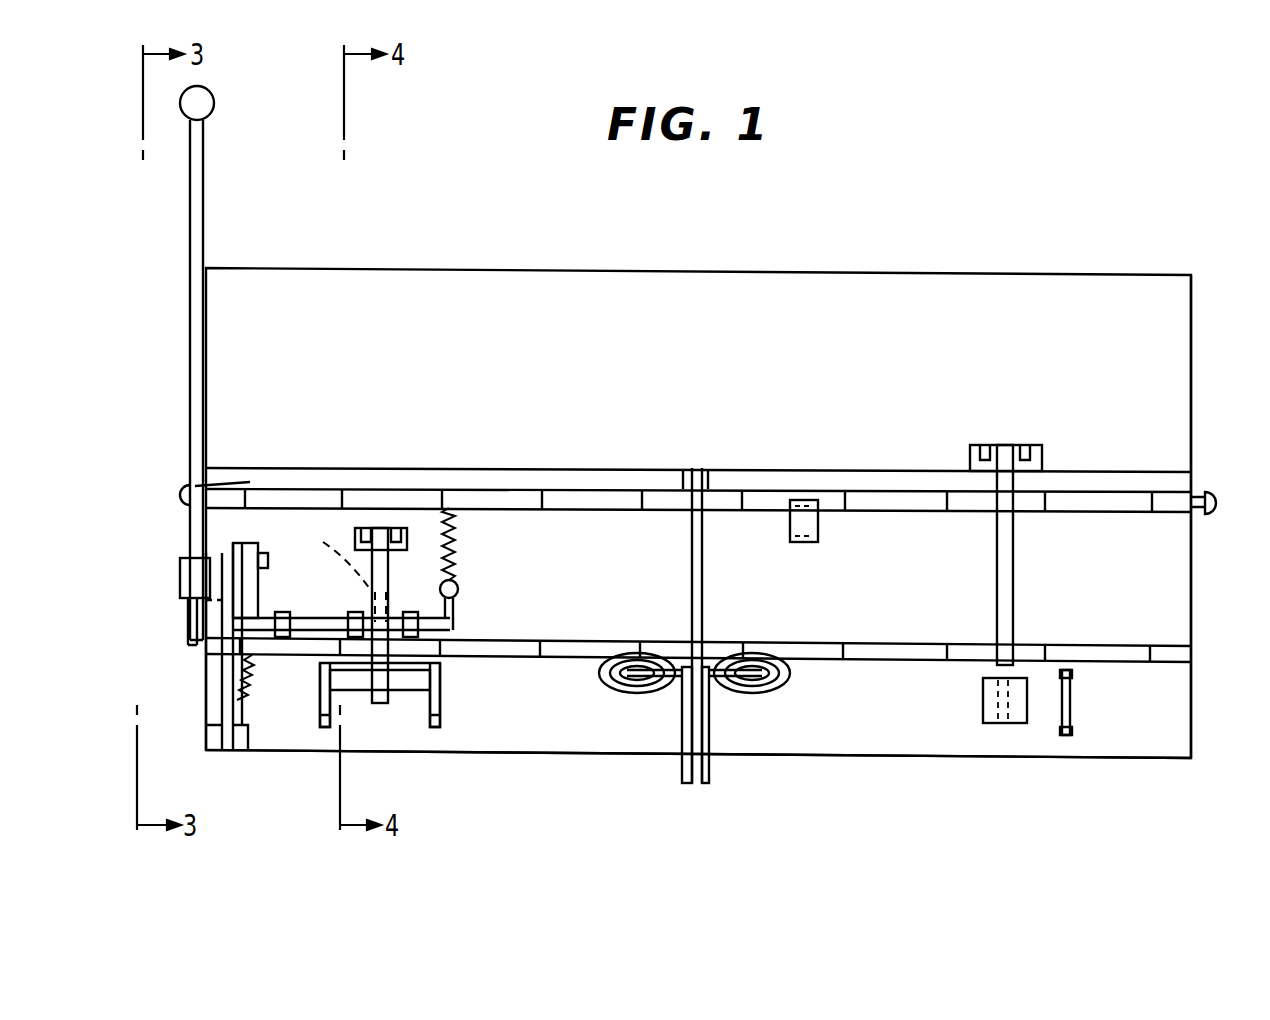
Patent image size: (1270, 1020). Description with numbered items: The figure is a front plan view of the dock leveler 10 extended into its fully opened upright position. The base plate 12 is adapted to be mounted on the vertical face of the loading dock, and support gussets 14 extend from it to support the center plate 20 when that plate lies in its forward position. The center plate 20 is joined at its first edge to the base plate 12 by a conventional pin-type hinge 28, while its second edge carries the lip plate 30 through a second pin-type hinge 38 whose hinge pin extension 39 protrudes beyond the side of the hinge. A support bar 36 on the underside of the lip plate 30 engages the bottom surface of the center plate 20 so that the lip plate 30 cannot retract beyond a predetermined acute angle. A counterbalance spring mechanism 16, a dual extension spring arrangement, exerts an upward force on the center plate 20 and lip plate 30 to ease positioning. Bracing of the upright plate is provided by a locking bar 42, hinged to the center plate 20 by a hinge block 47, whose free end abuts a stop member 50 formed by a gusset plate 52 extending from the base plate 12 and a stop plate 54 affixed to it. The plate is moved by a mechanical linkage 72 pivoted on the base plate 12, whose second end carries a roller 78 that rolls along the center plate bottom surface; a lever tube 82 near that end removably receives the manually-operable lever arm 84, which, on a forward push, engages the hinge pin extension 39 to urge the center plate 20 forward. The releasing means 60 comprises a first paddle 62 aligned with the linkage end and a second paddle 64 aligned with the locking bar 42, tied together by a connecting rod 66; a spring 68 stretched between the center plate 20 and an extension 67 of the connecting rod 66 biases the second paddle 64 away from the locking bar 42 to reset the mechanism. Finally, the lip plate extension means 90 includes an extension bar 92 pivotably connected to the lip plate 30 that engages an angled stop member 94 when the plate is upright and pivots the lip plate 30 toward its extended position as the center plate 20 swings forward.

The dock leveler 10 is at (1013, 190).
The base plate 12 is at (1160, 698).
The support gusset 14 is at (322, 727).
The counterbalance spring mechanism 16 is at (697, 700).
The center plate 20 is at (1165, 550).
The pin-type hinge 28 is at (845, 640).
The lip plate 30 is at (1158, 376).
The support bar 36 is at (800, 505).
The pin-type hinge 38 is at (893, 490).
The hinge pin extension 39 is at (178, 485).
The locking bar 42 is at (380, 535).
The hinge block 47 is at (365, 528).
The stop member 50 is at (455, 686).
The gusset plate 52 is at (438, 727).
The stop plate 54 is at (350, 678).
The releasing means 60 is at (488, 560).
The first paddle 62 is at (258, 596).
The second paddle 64 is at (340, 568).
The connecting rod 66 is at (305, 630).
The extension 67 is at (454, 608).
The spring 68 is at (455, 520).
The mechanical linkage 72 is at (216, 672).
The roller 78 is at (250, 543).
The lever tube 82 is at (183, 575).
The lever arm 84 is at (190, 318).
The lip plate extension means 90 is at (985, 557).
The extension bar 92 is at (1012, 546).
The stop member 94 is at (990, 723).